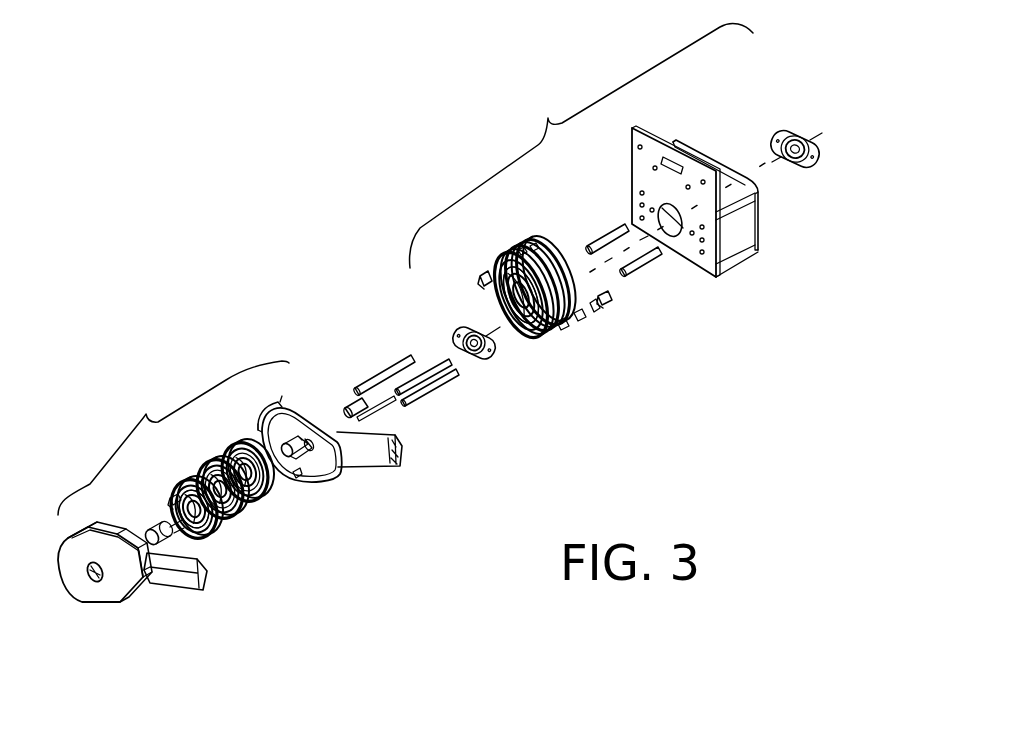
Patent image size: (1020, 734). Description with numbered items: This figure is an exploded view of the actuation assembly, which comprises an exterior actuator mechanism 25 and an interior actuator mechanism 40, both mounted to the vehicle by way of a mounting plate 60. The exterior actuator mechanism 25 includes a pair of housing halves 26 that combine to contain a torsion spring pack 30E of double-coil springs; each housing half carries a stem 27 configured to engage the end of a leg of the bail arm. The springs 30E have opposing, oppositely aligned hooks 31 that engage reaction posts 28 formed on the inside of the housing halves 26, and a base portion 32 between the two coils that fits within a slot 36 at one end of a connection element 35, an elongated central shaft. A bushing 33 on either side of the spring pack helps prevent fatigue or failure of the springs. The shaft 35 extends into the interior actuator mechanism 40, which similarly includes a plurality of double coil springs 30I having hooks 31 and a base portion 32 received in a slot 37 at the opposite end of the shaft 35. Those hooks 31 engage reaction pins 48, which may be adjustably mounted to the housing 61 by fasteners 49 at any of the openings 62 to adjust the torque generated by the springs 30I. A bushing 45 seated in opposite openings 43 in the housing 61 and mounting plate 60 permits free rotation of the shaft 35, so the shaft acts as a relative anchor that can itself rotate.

The exterior actuator mechanism 25 is at (173, 438).
The housing halves 26 is at (124, 612).
The stem 27 is at (185, 592).
The reaction posts 28 is at (273, 443).
The torsion spring pack 30E is at (270, 500).
The double coil springs 30I is at (556, 332).
The hooks 31 is at (172, 500).
The base portion 32 is at (204, 537).
The bushing 33 is at (158, 522).
The connection element 35 is at (388, 407).
The slot 36 is at (350, 406).
The slot 37 is at (453, 372).
The interior actuator mechanism 40 is at (581, 145).
The openings 43 is at (682, 226).
The bushing 45 is at (458, 332).
The reaction pins 48 is at (627, 270).
The fasteners 49 is at (385, 366).
The mounting plate 60 is at (636, 142).
The housing 61 is at (729, 178).
The openings 62 is at (640, 218).